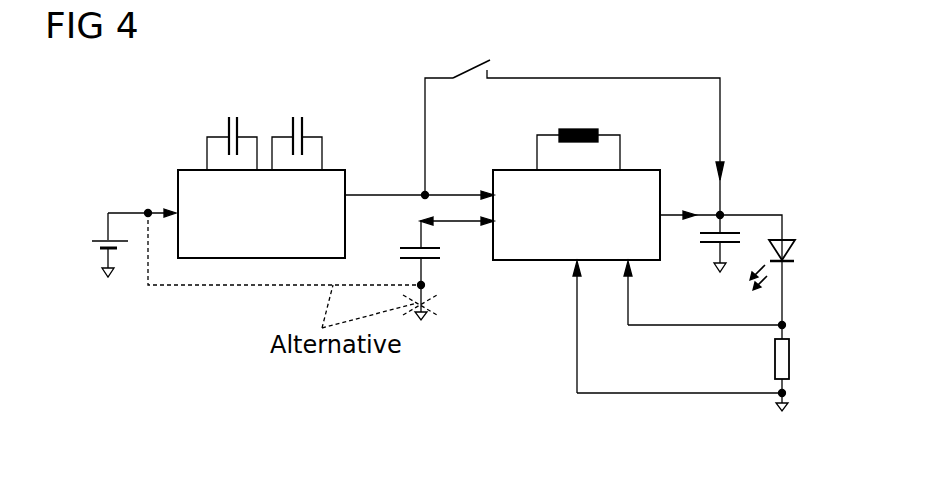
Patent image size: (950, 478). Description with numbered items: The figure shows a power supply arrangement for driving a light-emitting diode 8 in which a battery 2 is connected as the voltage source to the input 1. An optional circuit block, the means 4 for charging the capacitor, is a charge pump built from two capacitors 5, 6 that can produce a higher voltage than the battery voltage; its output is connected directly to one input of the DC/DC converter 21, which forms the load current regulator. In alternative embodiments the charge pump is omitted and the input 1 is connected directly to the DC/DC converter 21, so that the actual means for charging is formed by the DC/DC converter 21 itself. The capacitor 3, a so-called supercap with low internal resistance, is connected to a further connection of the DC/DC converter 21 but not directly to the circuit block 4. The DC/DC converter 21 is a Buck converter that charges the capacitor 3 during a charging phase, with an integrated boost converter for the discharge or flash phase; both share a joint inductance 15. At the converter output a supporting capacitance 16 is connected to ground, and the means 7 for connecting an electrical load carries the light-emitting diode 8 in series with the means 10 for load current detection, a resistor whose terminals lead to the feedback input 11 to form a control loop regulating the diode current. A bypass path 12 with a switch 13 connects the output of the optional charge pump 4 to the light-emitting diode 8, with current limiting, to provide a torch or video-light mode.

The input 1 is at (148, 210).
The battery 2 is at (92, 241).
The capacitor 3 is at (400, 252).
The means for charging the capacitor 4 is at (188, 170).
The capacitor 5 is at (230, 115).
The capacitor 6 is at (295, 115).
The means for connecting an electrical load 7 is at (724, 213).
The light-emitting diode 8 is at (793, 250).
The means for load current detection 10 is at (790, 360).
The feedback input 11 is at (573, 264).
The bypass path 12 is at (665, 78).
The switch 13 is at (473, 68).
The inductance 15 is at (559, 135).
The supporting capacitance 16 is at (710, 245).
The DC/DC converter 21 is at (645, 170).